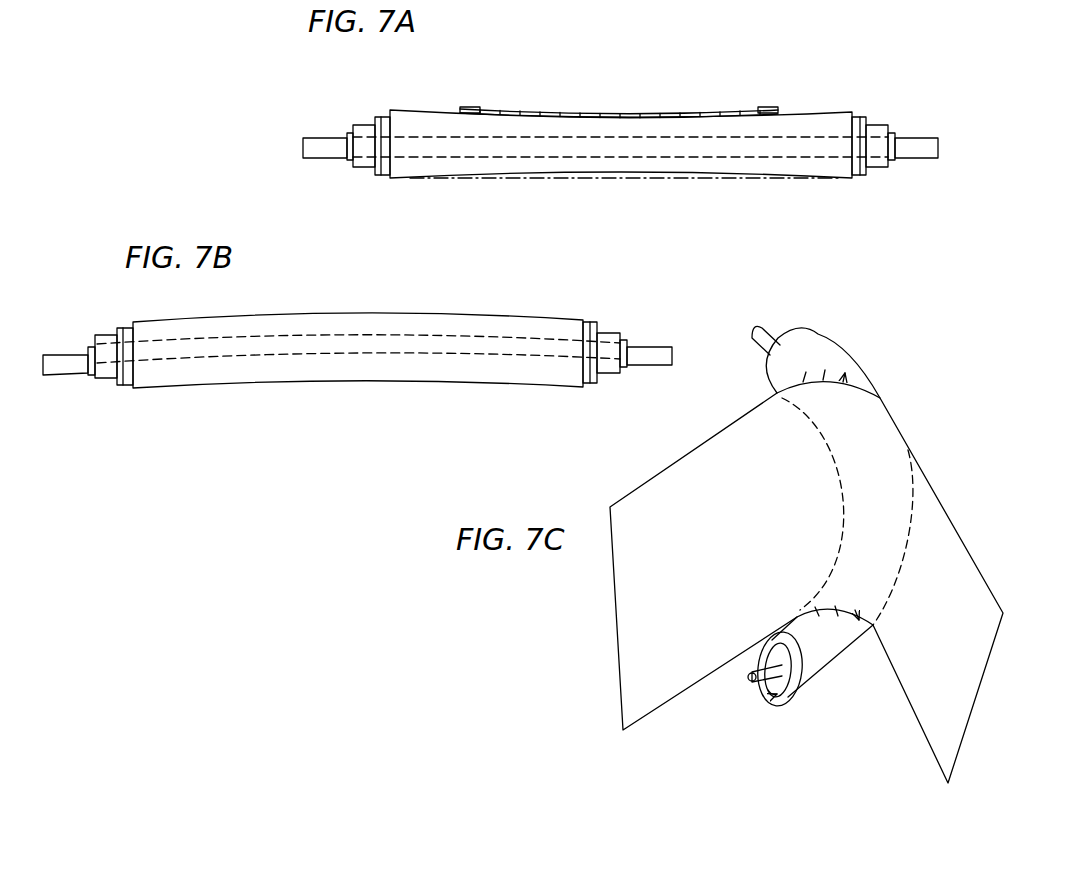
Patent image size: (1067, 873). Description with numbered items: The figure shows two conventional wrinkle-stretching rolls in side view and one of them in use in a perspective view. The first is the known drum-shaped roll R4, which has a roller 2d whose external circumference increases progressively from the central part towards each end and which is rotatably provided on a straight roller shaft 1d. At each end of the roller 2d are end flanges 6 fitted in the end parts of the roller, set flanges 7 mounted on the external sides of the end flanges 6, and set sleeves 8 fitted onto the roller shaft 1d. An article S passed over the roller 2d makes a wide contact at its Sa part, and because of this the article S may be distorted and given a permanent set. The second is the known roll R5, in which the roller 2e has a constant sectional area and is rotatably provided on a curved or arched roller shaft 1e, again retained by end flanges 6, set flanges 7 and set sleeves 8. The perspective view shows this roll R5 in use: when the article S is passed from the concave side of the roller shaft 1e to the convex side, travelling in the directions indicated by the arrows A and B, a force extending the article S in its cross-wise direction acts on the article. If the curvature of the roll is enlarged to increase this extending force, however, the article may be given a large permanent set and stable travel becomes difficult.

In FIG. 7A, the straight roller shaft 1d is at (933, 152).
In FIG. 7B, the curved or arched roller shaft 1e is at (665, 357).
In FIG. 7C, the curved or arched roller shaft 1e is at (750, 680).
In FIG. 7A, the roller 2d is at (783, 168).
In FIG. 7B, the roller 2e is at (445, 372).
In FIG. 7C, the roller 2e is at (823, 668).
In FIG. 7A, the end flanges 6 is at (384, 175).
In FIG. 7B, the end flanges 6 is at (128, 385).
In FIG. 7A, the set flanges 7 is at (368, 166).
In FIG. 7B, the set flanges 7 is at (113, 378).
In FIG. 7A, the set sleeves 8 is at (348, 160).
In FIG. 7B, the set sleeves 8 is at (90, 373).
In FIG. 7A, the article S is at (565, 110).
In FIG. 7C, the article S is at (975, 567).
In FIG. 7A, the wide contact part Sa is at (470, 107).
In FIG. 7A, the roll R4 is at (671, 174).
In FIG. 7B, the roll R5 is at (346, 381).
In FIG. 7C, the roll R5 is at (860, 372).
In FIG. 7C, the direction of travel of the article A is at (768, 488).
In FIG. 7C, the direction of travel of the article B is at (698, 605).